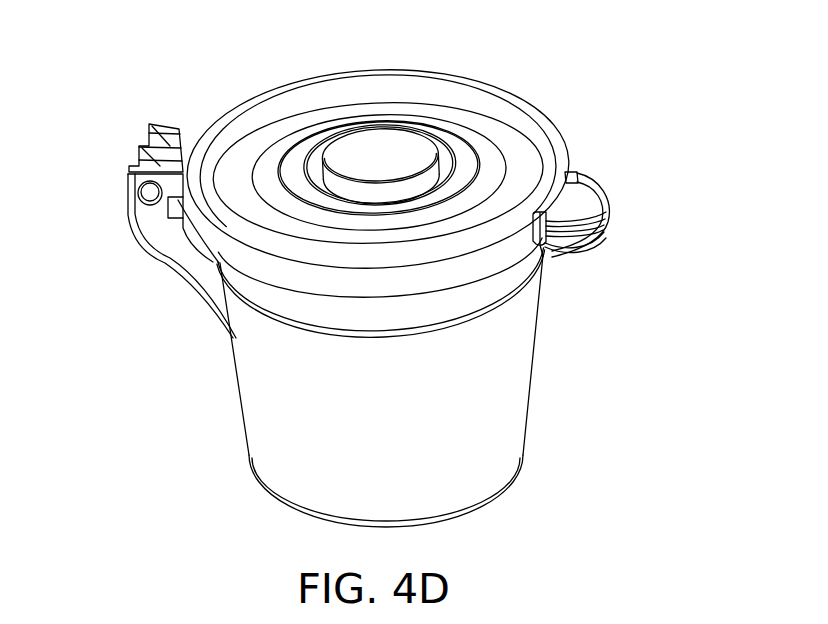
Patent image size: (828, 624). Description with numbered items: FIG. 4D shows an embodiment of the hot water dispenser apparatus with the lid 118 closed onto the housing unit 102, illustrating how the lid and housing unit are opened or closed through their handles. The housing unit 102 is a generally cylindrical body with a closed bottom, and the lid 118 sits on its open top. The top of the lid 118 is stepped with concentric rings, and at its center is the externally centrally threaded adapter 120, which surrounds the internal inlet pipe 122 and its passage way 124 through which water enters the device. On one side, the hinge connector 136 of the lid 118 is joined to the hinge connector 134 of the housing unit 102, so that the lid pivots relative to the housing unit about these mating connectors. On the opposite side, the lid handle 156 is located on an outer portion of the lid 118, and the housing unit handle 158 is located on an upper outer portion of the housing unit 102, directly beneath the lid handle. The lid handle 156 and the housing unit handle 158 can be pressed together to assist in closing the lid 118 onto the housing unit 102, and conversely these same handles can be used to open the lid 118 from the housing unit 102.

The housing unit 102 is at (263, 417).
The lid 118 is at (382, 182).
The externally centrally threaded adapter 120 is at (478, 160).
The internal inlet pipe 122 is at (466, 126).
The passage way 124 is at (395, 141).
The hinge connector 134 is at (137, 188).
The hinge connector 136 is at (153, 140).
The lid handle 156 is at (608, 192).
The housing unit handle 158 is at (595, 245).